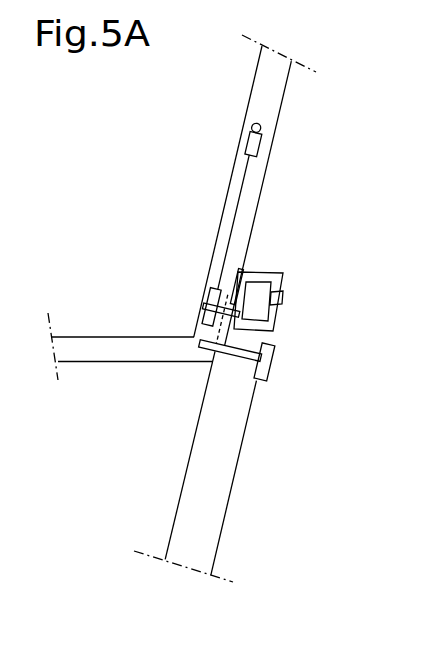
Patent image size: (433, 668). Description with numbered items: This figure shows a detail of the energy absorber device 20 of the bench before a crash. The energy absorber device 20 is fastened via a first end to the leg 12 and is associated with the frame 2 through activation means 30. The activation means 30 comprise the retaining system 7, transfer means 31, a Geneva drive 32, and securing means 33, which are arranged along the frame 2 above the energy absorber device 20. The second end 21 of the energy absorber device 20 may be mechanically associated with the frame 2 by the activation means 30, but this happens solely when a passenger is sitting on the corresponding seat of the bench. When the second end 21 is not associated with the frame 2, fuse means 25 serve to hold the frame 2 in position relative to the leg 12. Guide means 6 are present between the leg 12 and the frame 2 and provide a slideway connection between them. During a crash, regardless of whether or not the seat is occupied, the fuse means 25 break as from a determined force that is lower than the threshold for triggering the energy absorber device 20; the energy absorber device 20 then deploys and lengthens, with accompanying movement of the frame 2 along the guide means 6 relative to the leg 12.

The frame 2 is at (266, 198).
The guide means 6 is at (243, 268).
The retaining system 7 is at (262, 130).
The leg 12 is at (210, 461).
The energy absorber device 20 is at (259, 309).
The second end 21 is at (236, 333).
The fuse means 25 is at (237, 357).
The activation means 30 is at (174, 218).
The transfer means 31 is at (228, 255).
The Geneva drive 32 is at (252, 144).
The securing means 33 is at (211, 296).